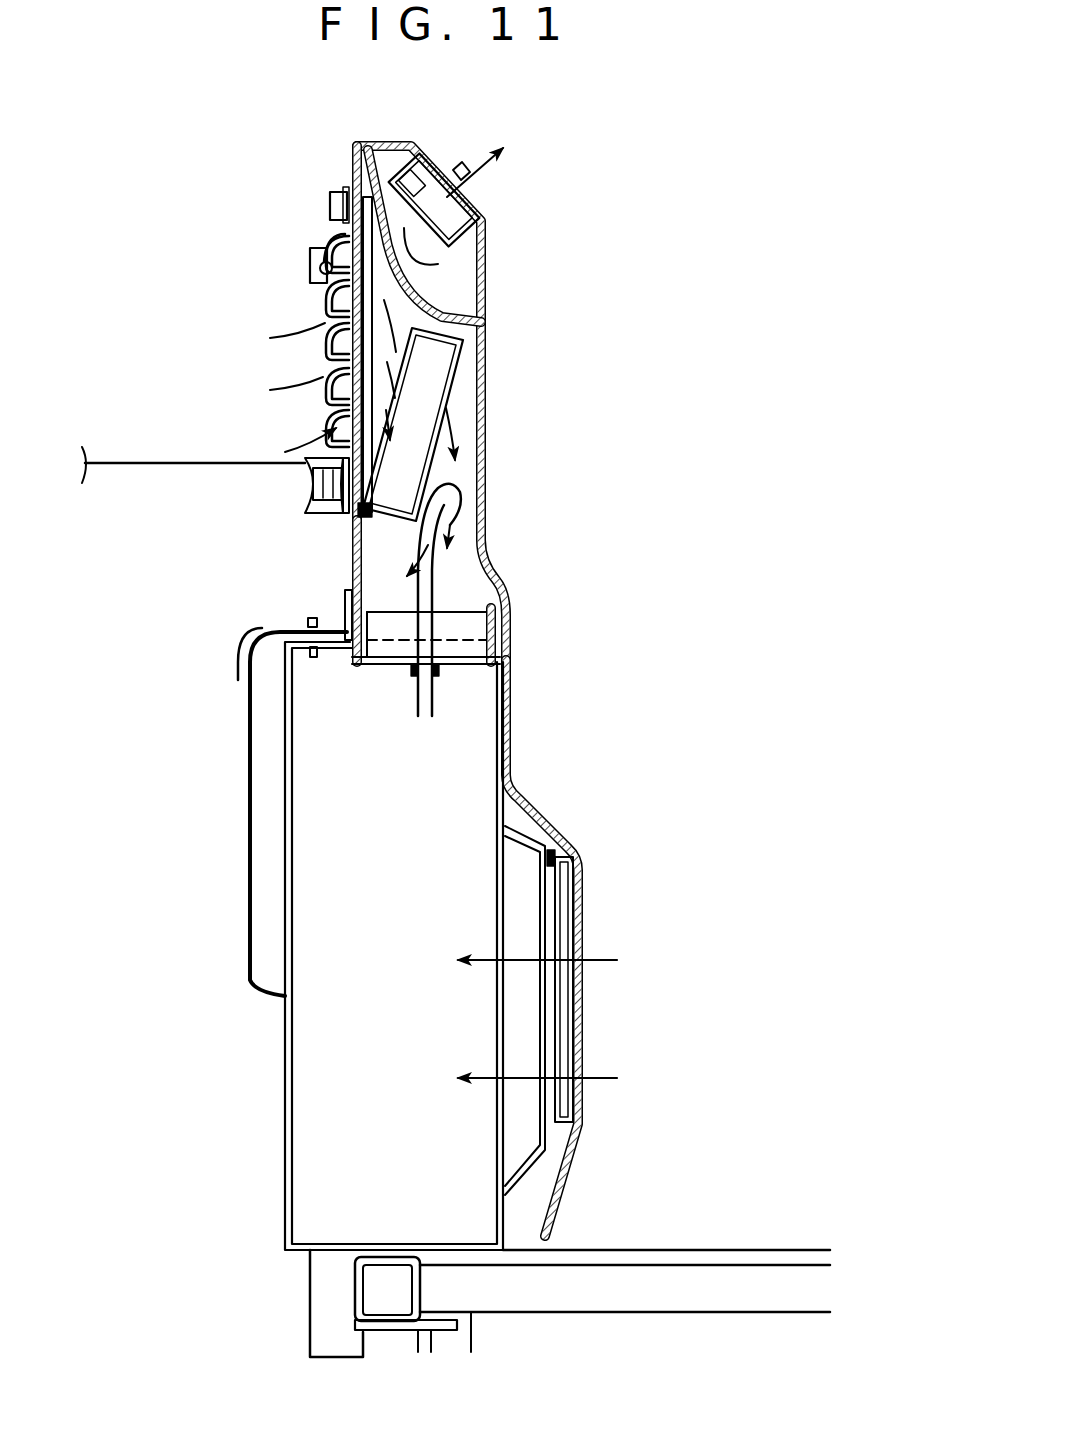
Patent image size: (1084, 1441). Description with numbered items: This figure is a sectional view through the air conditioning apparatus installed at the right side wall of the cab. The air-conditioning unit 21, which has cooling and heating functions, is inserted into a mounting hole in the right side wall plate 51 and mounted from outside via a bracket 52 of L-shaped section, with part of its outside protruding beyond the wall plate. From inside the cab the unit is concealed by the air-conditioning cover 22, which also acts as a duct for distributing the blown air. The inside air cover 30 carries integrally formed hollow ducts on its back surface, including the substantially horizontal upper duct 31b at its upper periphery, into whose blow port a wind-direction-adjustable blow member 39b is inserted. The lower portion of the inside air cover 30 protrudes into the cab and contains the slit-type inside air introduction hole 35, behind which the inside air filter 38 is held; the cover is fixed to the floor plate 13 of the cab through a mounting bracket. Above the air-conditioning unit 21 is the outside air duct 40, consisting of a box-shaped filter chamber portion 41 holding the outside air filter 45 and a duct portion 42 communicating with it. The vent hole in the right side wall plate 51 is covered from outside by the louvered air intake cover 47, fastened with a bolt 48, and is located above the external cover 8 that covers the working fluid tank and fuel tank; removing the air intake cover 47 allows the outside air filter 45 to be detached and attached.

The blow member 39b is at (470, 222).
The bolt 48 is at (330, 206).
The air intake cover 47 is at (327, 312).
The upper duct 31b is at (457, 262).
The inside air cover 30 is at (482, 322).
The outside air duct 40 is at (327, 365).
The external cover 8 is at (123, 460).
The outside air filter 45 is at (440, 395).
The filter chamber portion 41 is at (360, 412).
The duct portion 42 is at (350, 545).
The right side wall plate 51 is at (352, 572).
The bracket 52 is at (345, 600).
The air-conditioning cover 22 is at (560, 802).
The inside air filter 38 is at (580, 897).
The inside air introduction hole 35 is at (585, 951).
The air-conditioning unit 21 is at (282, 1084).
The floor plate 13 is at (660, 1250).